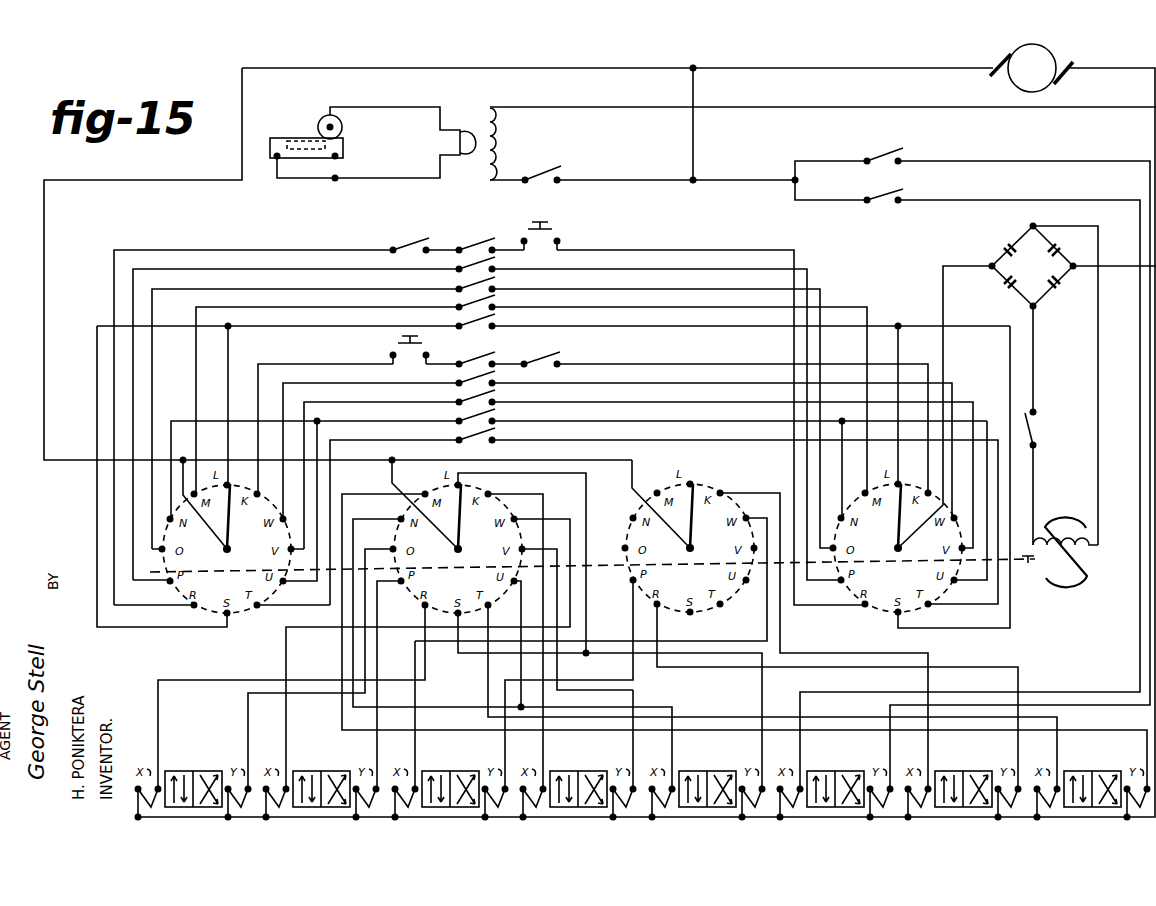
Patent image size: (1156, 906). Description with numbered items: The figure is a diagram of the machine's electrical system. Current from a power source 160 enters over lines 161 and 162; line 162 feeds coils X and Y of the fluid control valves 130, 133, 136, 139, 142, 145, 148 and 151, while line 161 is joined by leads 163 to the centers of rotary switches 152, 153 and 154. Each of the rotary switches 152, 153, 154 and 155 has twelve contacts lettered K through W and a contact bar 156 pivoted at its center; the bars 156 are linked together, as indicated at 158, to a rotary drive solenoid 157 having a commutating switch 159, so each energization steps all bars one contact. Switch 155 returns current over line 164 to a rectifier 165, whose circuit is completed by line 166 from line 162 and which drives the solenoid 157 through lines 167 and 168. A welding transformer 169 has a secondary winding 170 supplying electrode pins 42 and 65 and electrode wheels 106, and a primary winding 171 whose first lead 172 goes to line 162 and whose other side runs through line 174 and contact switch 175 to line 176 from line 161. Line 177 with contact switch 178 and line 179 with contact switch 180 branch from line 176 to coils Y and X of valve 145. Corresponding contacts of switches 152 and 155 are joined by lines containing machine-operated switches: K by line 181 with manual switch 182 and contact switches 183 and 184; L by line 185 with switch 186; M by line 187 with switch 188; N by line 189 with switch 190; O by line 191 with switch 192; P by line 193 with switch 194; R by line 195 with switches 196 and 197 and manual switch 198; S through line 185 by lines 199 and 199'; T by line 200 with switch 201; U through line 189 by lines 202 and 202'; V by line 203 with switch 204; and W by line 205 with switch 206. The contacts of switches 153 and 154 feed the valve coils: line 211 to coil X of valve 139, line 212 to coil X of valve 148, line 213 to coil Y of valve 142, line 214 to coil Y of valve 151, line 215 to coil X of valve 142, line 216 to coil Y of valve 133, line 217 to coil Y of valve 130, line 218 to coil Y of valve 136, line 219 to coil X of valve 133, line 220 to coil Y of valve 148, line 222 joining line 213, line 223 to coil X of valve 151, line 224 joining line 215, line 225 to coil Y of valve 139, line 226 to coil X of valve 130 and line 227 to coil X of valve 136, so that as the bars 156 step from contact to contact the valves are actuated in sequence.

The electrode pins 42 is at (294, 138).
The electrode pins 65 is at (312, 151).
The electrode wheels 106 is at (342, 124).
The valve 130 is at (330, 756).
The valve 133 is at (202, 756).
The valve 136 is at (459, 756).
The valve 139 is at (587, 756).
The valve 142 is at (716, 756).
The valve 145 is at (844, 756).
The valve 148 is at (972, 756).
The valve 151 is at (1101, 756).
The rotary switch 152 is at (240, 610).
The rotary switch 153 is at (408, 600).
The rotary switch 154 is at (706, 610).
The rotary switch 155 is at (880, 614).
The contact bar 156 is at (232, 535).
The rotary drive solenoid 157 is at (1085, 553).
The mechanical connection 158 is at (244, 571).
The commutating switch 159 is at (1036, 428).
The power source 160 is at (1052, 54).
The line 161 is at (447, 69).
The line 162 is at (1106, 69).
The leads 163 is at (206, 516).
The line 164 is at (944, 296).
The rectifier 165 is at (1004, 254).
The line 166 is at (1122, 262).
The line 167 is at (1097, 358).
The line 168 is at (1034, 328).
The welding transformer 169 is at (464, 126).
The secondary winding 170 is at (457, 142).
The primary winding 171 is at (498, 140).
The first lead 172 is at (512, 108).
The line 174 is at (508, 181).
The contact switch 175 is at (545, 168).
The line 176 is at (694, 126).
The line 177 is at (968, 162).
The contact switch 178 is at (888, 148).
The line 179 is at (968, 201).
The contact switch 180 is at (888, 190).
The line 181 is at (702, 364).
The normally open manually closed switch 182 is at (398, 344).
The contact switch 183 is at (472, 342).
The contact switch 184 is at (554, 350).
The line 185 is at (312, 326).
The contact switch 186 is at (459, 318).
The line 187 is at (295, 307).
The contact switch 188 is at (459, 299).
The line 189 is at (335, 421).
The contact switch 190 is at (459, 413).
The line 191 is at (282, 289).
The switch 192 is at (459, 281).
The line 193 is at (195, 269).
The contact switch 194 is at (459, 261).
The line 195 is at (140, 250).
The contact switch 196 is at (412, 240).
The contact switch 197 is at (459, 242).
The switch 198 is at (554, 228).
The line 199 is at (142, 484).
The line 199' is at (954, 477).
The line 200 is at (370, 440).
The contact switch 201 is at (459, 432).
The line 202 is at (317, 501).
The line 202' is at (981, 486).
The line 203 is at (312, 402).
The contact switch 204 is at (459, 394).
The line 205 is at (312, 383).
The contact switch 206 is at (459, 375).
The line 211 is at (528, 494).
The line 212 is at (745, 493).
The line 213 is at (535, 473).
The line 214 is at (356, 494).
The line 215 is at (366, 519).
The line 216 is at (384, 548).
The line 217 is at (384, 648).
The line 218 is at (580, 676).
The line 219 is at (212, 680).
The line 220 is at (660, 630).
The line 222 is at (484, 652).
The line 223 is at (502, 680).
The line 224 is at (496, 612).
The line 225 is at (631, 738).
The line 226 is at (562, 519).
The line 227 is at (420, 692).